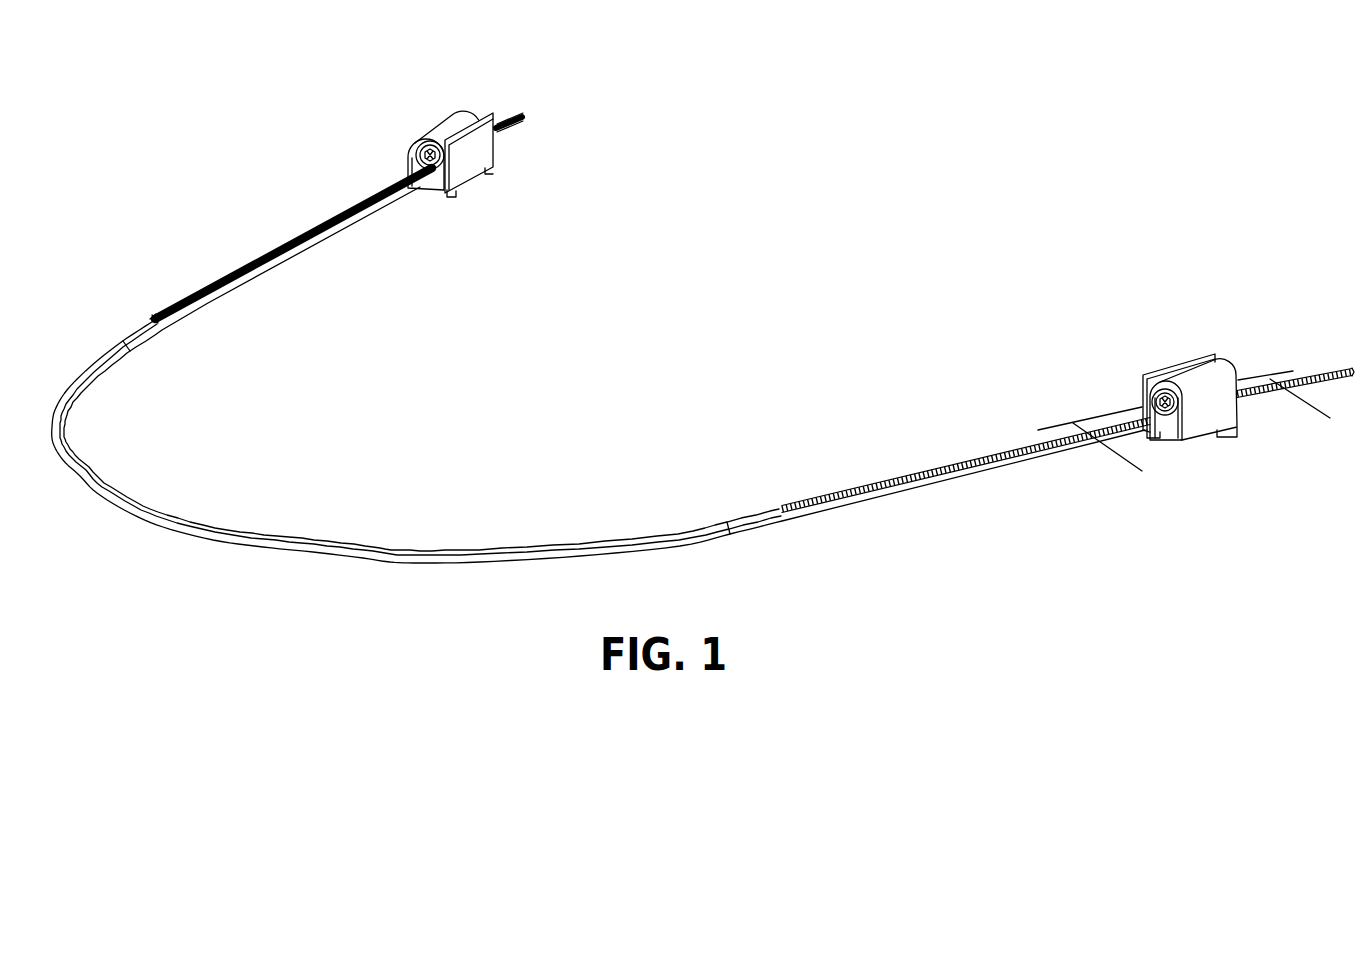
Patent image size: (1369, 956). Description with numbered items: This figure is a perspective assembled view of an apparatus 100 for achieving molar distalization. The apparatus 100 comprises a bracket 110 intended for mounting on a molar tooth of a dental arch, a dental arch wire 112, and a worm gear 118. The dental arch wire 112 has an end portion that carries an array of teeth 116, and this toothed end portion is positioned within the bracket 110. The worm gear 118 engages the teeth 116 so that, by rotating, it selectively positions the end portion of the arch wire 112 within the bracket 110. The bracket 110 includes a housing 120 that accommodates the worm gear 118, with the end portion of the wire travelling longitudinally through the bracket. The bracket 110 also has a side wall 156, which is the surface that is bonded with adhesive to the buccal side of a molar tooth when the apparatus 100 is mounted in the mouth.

The apparatus 100 is at (277, 132).
The bracket 110 is at (1233, 361).
The dental arch wire 112 is at (256, 534).
The teeth 116 is at (1036, 447).
The worm gear 118 is at (1153, 398).
The housing 120 is at (1257, 380).
The side wall 156 is at (1152, 366).